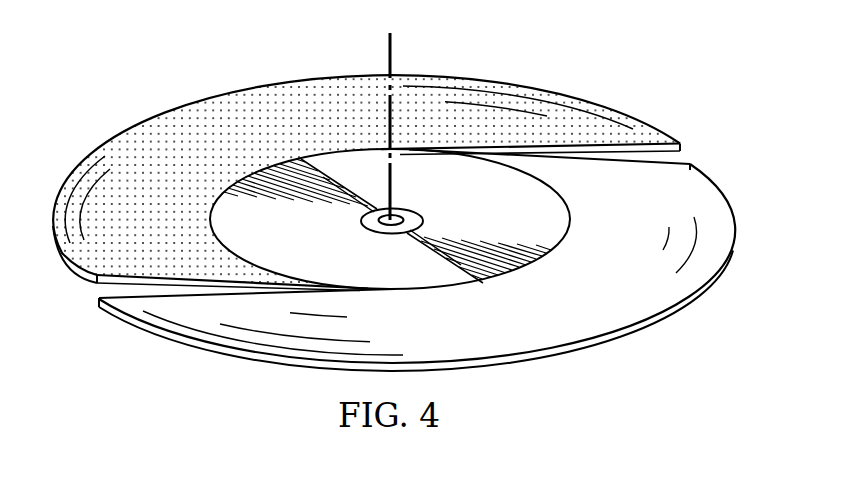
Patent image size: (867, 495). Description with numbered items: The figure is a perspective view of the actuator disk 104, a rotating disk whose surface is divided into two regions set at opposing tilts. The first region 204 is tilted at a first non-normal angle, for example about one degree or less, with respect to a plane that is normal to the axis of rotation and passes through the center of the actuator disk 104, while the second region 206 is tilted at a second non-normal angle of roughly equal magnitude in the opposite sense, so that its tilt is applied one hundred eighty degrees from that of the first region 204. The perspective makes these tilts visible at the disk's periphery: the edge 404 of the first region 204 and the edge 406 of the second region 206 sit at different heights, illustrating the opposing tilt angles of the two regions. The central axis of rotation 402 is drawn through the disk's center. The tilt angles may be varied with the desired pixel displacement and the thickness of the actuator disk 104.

The actuator disk 104 is at (166, 101).
The second region 206 is at (262, 144).
The first region 204 is at (570, 317).
The axis of rotation 402 is at (388, 56).
The edge of second region 406 is at (682, 150).
The edge of first region 404 is at (683, 165).